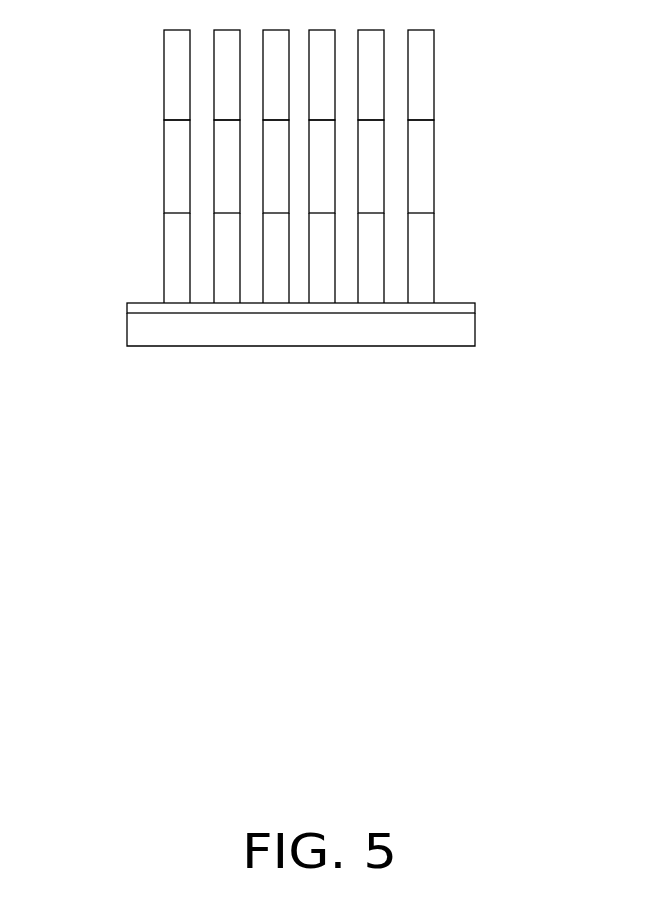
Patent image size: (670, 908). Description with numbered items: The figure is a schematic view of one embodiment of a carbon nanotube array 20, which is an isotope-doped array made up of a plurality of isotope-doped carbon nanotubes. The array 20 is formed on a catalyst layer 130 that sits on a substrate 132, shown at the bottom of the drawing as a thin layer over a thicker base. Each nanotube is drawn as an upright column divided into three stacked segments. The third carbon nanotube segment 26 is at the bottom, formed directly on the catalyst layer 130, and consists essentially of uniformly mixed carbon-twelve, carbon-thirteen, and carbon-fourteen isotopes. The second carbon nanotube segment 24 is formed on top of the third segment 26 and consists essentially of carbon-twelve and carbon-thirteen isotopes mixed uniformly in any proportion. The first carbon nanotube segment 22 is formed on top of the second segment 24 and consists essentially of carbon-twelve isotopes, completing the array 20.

The carbon nanotube array 20 is at (392, 166).
The first carbon nanotube segment 22 is at (423, 78).
The second carbon nanotube segment 24 is at (423, 185).
The third carbon nanotube segment 26 is at (347, 258).
The catalyst layer 130 is at (145, 306).
The substrate 132 is at (142, 335).